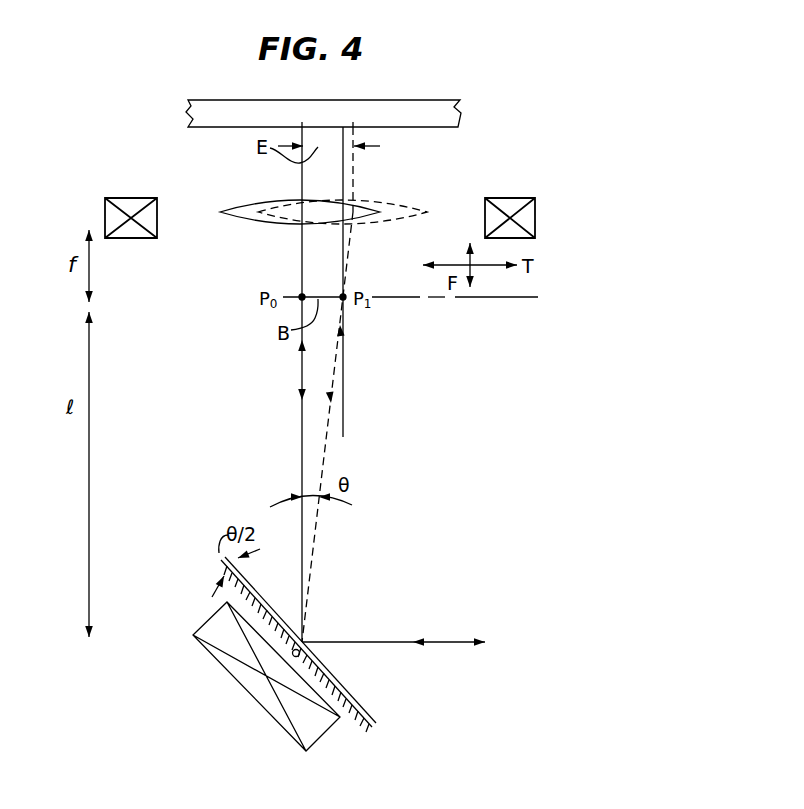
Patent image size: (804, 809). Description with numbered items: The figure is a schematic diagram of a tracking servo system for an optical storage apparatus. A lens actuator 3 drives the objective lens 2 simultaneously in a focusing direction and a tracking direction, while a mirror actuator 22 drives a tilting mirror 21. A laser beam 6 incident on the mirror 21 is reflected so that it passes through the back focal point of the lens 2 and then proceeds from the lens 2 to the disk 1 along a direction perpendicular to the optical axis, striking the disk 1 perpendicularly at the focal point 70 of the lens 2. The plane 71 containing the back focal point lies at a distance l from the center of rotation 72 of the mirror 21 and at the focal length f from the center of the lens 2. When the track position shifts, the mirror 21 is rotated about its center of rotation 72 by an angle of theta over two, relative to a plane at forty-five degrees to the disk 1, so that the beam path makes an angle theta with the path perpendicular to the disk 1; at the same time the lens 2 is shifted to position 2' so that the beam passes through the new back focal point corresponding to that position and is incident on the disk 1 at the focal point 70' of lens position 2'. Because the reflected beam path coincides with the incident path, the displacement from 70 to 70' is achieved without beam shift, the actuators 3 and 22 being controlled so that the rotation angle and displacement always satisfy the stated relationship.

The disk 1 is at (458, 108).
The focal point 70 is at (301, 116).
The focal point of lens position 2' 70' is at (360, 116).
The objective lens 2 is at (300, 239).
The lens position 2' is at (342, 193).
The lens actuator 3 is at (535, 213).
The focal plane of lens 71 is at (538, 297).
The center of rotation 72 is at (310, 638).
The laser beam 6 is at (377, 631).
The tilting mirror 21 is at (220, 566).
The mirror actuator 22 is at (243, 685).